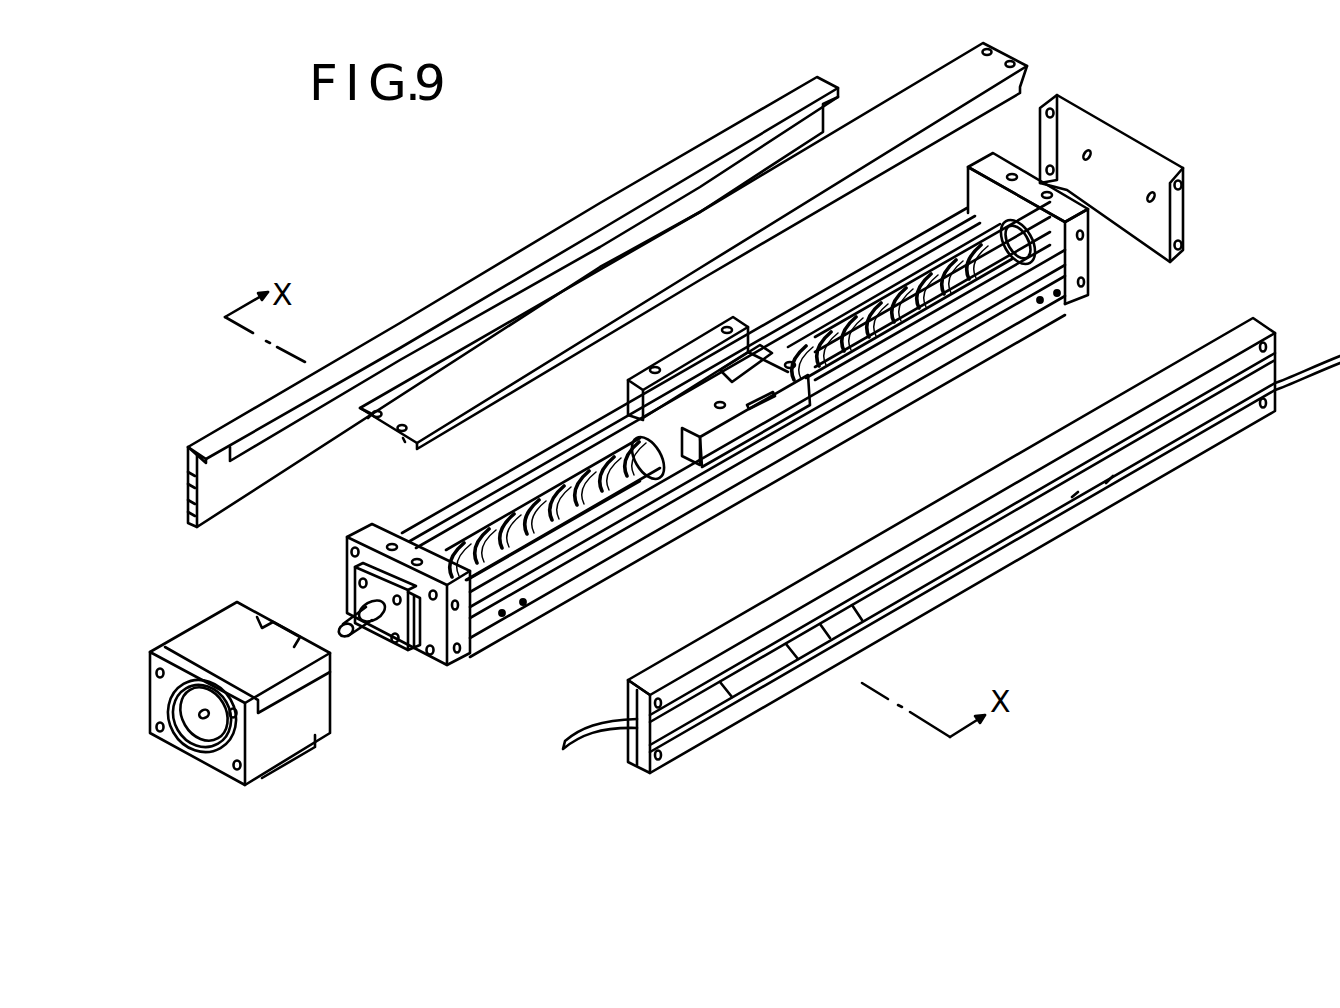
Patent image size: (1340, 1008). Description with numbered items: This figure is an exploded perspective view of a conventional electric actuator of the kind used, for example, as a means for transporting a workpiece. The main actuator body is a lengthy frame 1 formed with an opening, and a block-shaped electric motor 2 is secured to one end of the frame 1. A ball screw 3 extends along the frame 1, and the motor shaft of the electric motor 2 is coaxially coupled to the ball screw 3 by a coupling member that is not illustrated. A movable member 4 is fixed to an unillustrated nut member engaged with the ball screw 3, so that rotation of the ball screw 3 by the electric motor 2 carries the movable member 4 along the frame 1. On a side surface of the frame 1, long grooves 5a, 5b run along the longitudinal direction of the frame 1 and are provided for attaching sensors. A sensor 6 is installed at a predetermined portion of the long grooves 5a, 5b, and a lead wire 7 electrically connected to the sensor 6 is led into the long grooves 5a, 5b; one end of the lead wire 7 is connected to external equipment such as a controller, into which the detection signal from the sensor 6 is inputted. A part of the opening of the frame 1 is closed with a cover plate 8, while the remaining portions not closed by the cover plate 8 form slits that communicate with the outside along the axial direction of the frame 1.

The frame 1 is at (598, 591).
The electric motor 2 is at (310, 758).
The ball screw 3 is at (641, 470).
The movable member 4 is at (768, 426).
The long groove 5a is at (742, 690).
The long groove 5b is at (790, 665).
The sensor 6 is at (880, 623).
The lead wire 7 is at (597, 733).
The cover plate 8 is at (600, 290).